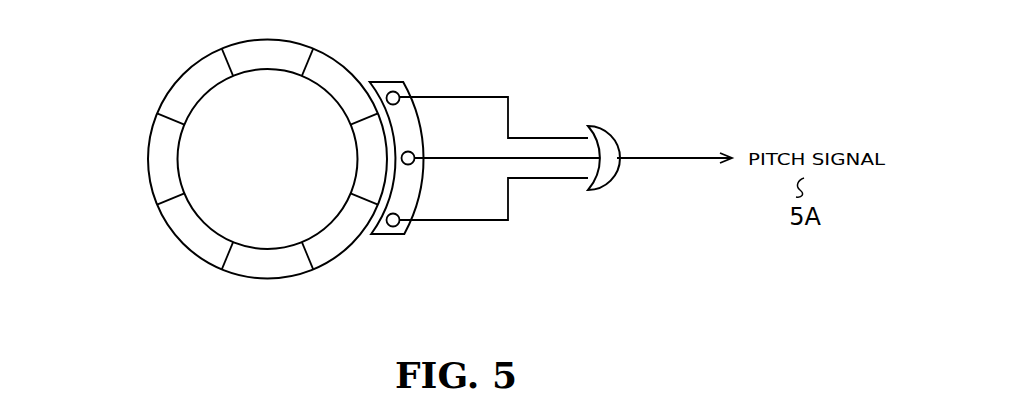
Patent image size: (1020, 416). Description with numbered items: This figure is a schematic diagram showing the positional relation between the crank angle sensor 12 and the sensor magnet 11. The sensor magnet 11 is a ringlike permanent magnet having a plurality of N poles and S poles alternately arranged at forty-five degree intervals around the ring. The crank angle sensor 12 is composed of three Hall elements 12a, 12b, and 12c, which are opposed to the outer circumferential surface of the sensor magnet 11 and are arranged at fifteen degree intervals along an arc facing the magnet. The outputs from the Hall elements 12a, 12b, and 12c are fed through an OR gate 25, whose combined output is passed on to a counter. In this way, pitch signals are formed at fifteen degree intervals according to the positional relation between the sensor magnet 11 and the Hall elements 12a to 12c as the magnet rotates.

The sensor magnet 11 is at (150, 176).
The crank angle sensor 12 is at (436, 139).
The Hall element 12a is at (396, 91).
The Hall element 12b is at (410, 165).
The Hall element 12c is at (398, 232).
The OR gate 25 is at (597, 190).